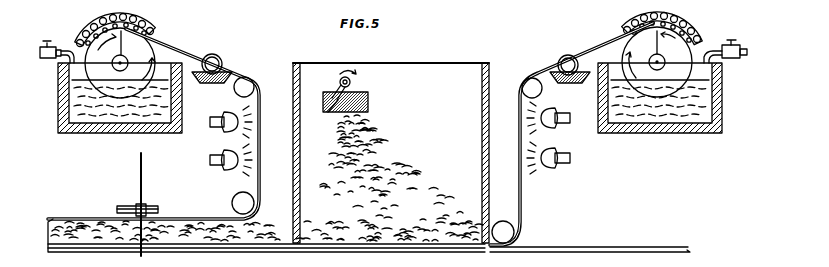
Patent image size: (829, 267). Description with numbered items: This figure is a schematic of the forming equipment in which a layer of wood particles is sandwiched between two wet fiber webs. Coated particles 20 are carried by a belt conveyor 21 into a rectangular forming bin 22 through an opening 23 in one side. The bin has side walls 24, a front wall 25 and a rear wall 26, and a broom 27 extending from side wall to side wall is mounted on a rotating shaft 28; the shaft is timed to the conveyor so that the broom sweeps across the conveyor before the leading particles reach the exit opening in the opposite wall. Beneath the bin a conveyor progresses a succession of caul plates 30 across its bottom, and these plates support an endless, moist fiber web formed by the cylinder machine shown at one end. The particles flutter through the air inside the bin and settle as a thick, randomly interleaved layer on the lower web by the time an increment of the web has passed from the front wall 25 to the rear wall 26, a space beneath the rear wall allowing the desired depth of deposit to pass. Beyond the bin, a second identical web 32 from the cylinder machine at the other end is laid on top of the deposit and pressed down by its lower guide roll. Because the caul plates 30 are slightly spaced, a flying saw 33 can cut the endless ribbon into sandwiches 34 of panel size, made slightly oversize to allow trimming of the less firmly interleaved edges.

The coated particles 20 is at (370, 97).
The belt conveyor 21 is at (342, 113).
The forming bin 22 is at (462, 57).
The opening 23 is at (355, 100).
The side walls 24 is at (449, 157).
The front wall 25 is at (490, 85).
The rear wall 26 is at (292, 72).
The broom 27 is at (330, 87).
The rotating shaft 28 is at (350, 77).
The caul plates 30 is at (586, 246).
The second web 32 is at (204, 219).
The flying saw 33 is at (144, 197).
The sandwiches 34 is at (77, 213).